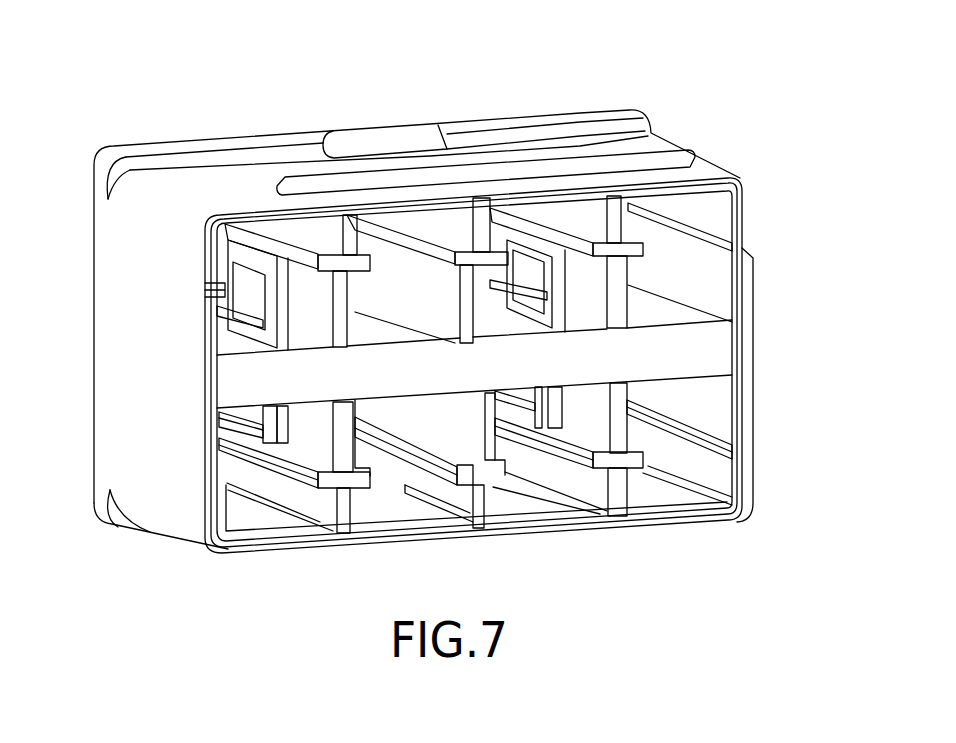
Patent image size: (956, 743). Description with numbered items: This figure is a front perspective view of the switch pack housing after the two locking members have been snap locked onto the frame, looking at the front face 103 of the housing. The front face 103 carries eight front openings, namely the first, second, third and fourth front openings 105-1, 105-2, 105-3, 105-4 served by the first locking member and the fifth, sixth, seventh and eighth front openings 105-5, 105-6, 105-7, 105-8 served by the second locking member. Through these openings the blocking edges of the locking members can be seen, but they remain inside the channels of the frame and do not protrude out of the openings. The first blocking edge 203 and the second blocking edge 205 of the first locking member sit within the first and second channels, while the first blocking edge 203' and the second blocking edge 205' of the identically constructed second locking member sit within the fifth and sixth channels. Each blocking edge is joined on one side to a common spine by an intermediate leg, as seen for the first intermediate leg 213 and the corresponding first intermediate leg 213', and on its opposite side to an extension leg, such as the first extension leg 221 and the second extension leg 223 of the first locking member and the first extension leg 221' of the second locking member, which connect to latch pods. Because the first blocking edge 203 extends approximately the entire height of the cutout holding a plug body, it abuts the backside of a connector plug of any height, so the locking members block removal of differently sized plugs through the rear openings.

The front face 103 is at (435, 380).
The first front opening 105-1 is at (231, 350).
The second front opening 105-2 is at (246, 507).
The third front opening 105-3 is at (381, 258).
The fourth front opening 105-4 is at (388, 494).
The fifth front opening 105-5 is at (578, 215).
The sixth front opening 105-6 is at (514, 488).
The seventh front opening 105-7 is at (701, 272).
The eighth front opening 105-8 is at (651, 481).
The first blocking edge 203 is at (305, 306).
The first blocking edge of second locking member 203' is at (620, 279).
The second blocking edge 205 is at (308, 409).
The second blocking edge of second locking member 205' is at (659, 405).
The first intermediate leg 213 is at (198, 312).
The first intermediate leg of second locking member 213' is at (518, 330).
The first extension leg 221 is at (205, 292).
The first extension leg of second locking member 221' is at (527, 199).
The second extension leg 223 is at (232, 428).